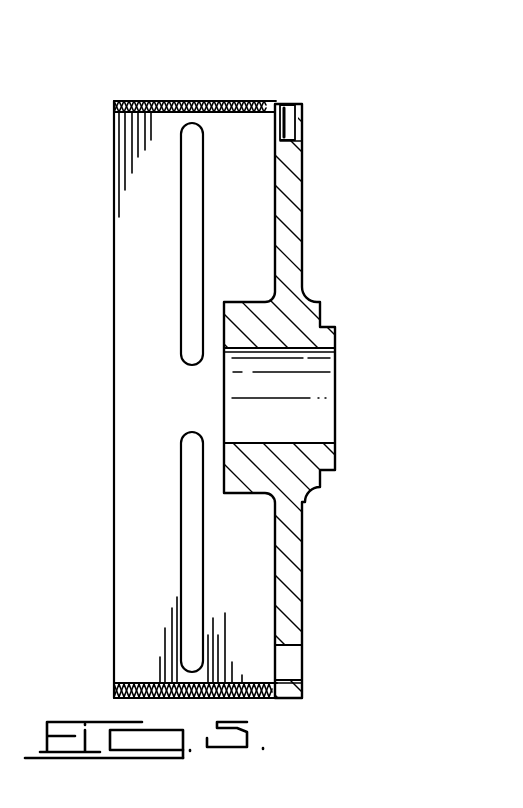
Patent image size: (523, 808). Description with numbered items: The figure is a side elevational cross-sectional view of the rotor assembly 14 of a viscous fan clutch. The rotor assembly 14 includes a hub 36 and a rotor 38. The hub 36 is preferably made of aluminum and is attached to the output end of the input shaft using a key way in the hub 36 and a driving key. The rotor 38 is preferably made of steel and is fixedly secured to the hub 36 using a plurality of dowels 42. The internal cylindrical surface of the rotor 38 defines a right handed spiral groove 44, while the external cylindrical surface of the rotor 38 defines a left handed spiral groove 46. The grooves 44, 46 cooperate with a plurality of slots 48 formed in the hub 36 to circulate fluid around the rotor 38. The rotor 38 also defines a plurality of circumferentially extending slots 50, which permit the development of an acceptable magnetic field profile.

The rotor assembly 14 is at (225, 400).
The hub 36 is at (300, 482).
The rotor 38 is at (153, 103).
The dowels 42 is at (303, 121).
The right handed spiral groove 44 is at (122, 690).
The left handed spiral groove 46 is at (142, 696).
The slots 48 is at (292, 648).
The circumferentially extending slots 50 is at (193, 233).